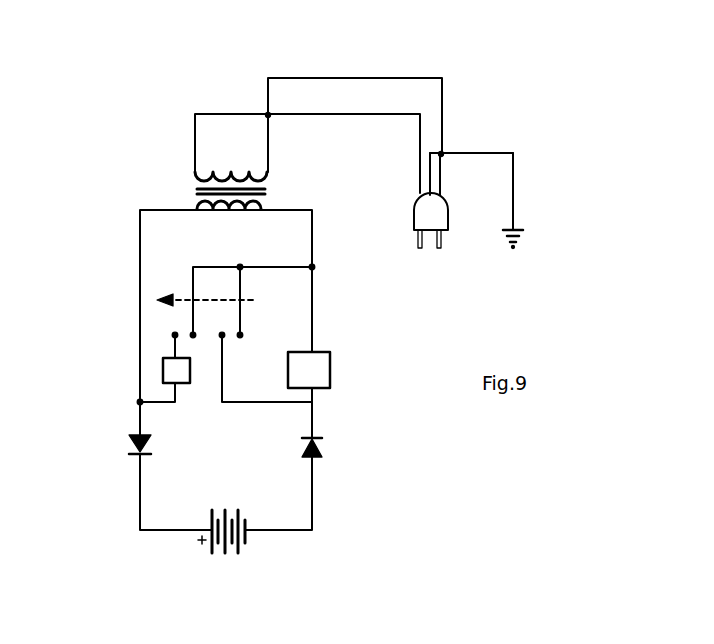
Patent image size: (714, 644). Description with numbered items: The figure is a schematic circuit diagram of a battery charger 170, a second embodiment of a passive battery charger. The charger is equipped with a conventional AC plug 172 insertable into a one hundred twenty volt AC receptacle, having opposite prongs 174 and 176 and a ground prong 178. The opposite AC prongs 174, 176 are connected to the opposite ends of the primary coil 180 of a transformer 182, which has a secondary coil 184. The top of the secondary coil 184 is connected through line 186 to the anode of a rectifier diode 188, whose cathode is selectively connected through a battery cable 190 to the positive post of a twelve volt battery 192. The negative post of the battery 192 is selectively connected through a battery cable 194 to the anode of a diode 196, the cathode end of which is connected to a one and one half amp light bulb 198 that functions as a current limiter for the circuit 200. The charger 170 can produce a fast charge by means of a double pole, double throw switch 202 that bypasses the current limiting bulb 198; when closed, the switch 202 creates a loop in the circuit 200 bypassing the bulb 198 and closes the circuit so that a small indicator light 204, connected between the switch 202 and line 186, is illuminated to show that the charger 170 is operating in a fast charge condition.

The battery charger 170 is at (553, 65).
The AC plug 172 is at (414, 217).
The prong 174 is at (441, 248).
The prong 176 is at (418, 248).
The ground prong 178 is at (516, 243).
The primary coil 180 is at (268, 180).
The transformer 182 is at (195, 190).
The secondary coil 184 is at (265, 207).
The line 186 is at (140, 345).
The rectifier diode 188 is at (130, 447).
The battery cable 190 is at (140, 503).
The battery 192 is at (225, 553).
The battery cable 194 is at (312, 505).
The diode 196 is at (322, 452).
The light bulb 198 is at (330, 365).
The circuit 200 is at (269, 135).
The switch 202 is at (218, 266).
The indicator light 204 is at (190, 380).